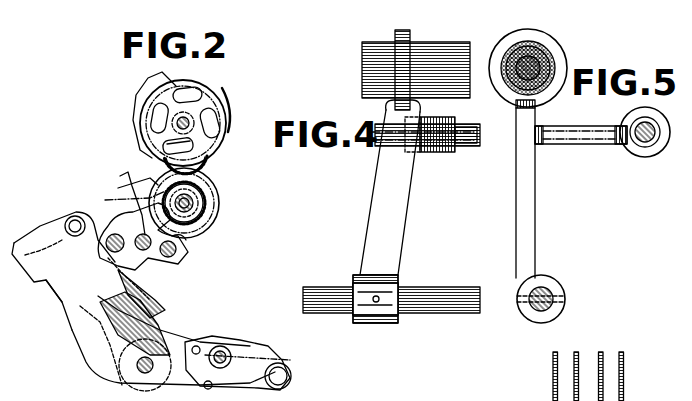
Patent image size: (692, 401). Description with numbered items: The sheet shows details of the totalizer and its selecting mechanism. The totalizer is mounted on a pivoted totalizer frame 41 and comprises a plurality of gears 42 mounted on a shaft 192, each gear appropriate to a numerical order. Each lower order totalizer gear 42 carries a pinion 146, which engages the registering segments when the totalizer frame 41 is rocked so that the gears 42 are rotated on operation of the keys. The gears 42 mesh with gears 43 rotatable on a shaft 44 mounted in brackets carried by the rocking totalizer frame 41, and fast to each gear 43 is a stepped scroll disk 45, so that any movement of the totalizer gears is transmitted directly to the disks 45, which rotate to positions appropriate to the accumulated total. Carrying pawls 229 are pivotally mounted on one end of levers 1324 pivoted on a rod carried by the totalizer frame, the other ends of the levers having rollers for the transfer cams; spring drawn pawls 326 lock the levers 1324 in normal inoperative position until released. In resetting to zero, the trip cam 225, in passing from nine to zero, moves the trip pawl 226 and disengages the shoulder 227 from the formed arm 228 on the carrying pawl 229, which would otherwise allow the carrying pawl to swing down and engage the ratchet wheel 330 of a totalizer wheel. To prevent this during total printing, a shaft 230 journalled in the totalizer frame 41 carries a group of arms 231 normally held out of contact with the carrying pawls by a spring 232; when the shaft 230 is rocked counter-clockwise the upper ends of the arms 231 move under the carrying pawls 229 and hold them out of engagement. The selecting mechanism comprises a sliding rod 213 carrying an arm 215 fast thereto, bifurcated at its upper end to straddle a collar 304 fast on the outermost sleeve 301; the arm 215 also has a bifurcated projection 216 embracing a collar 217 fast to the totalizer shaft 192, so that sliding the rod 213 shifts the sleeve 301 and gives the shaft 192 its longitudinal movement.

In FIG. 2, the pivoted totalizer frame 41 is at (128, 304).
In FIG. 2, the totalizer gears 42 is at (220, 192).
In FIG. 2, the gears 43 is at (210, 150).
In FIG. 2, the shaft 44 is at (177, 123).
In FIG. 2, the stepped scroll disk 45 is at (140, 88).
In FIG. 2, the pinion 146 is at (206, 215).
In FIG. 2, the totalizer shaft 192 is at (190, 210).
In FIG. 4, the totalizer shaft 192 is at (470, 145).
In FIG. 5, the totalizer shaft 192 is at (652, 146).
In FIG. 4, the sliding rod 213 is at (446, 292).
In FIG. 5, the sliding rod 213 is at (544, 290).
In FIG. 4, the arm 215 is at (396, 189).
In FIG. 5, the arm 215 is at (528, 218).
In FIG. 4, the bifurcated projection 216 is at (426, 134).
In FIG. 5, the bifurcated projection 216 is at (578, 138).
In FIG. 4, the collar 217 is at (428, 150).
In FIG. 5, the collar 217 is at (645, 141).
In FIG. 2, the trip cam 225 is at (162, 198).
In FIG. 2, the trip pawl 226 is at (180, 245).
In FIG. 2, the shoulder 227 is at (118, 190).
In FIG. 2, the formed arm 228 is at (130, 195).
In FIG. 2, the carrying pawl 229 is at (94, 214).
In FIG. 2, the shaft 230 is at (146, 270).
In FIG. 2, the arms 231 is at (112, 212).
In FIG. 2, the spring 232 is at (92, 275).
In FIG. 4, the sleeve 301 is at (430, 50).
In FIG. 5, the sleeve 301 is at (503, 78).
In FIG. 4, the collar 304 is at (400, 36).
In FIG. 5, the collar 304 is at (548, 46).
In FIG. 2, the spring drawn pawl 326 is at (270, 318).
In FIG. 2, the ratchet wheel 330 is at (205, 203).
In FIG. 2, the lever 1324 is at (90, 345).